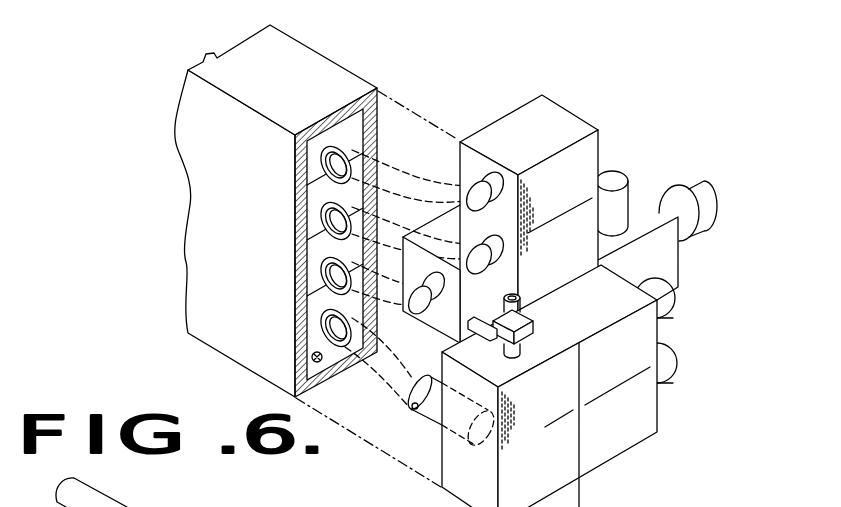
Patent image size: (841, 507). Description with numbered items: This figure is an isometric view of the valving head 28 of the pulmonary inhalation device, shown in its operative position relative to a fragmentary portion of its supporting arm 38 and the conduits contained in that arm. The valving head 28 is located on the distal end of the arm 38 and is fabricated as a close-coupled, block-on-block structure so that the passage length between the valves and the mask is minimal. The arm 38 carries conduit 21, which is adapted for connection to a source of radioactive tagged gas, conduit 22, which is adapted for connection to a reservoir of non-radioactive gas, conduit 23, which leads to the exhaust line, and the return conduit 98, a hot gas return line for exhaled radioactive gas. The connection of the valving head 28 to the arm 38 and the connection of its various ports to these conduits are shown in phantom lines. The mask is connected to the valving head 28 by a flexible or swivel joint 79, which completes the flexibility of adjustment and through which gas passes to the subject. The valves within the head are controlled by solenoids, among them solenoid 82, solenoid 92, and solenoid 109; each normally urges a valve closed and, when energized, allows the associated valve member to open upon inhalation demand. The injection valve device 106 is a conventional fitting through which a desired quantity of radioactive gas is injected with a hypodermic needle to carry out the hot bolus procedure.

The arm 38 is at (291, 208).
The conduit 21 is at (322, 163).
The return conduit 98 is at (323, 214).
The conduit 23 is at (322, 272).
The conduit 22 is at (320, 322).
The solenoid 82 is at (622, 200).
The swivel joint 79 is at (670, 200).
The injection valve device 106 is at (530, 314).
The solenoid 109 is at (675, 316).
The solenoid 92 is at (677, 382).
The valving head 28 is at (570, 301).